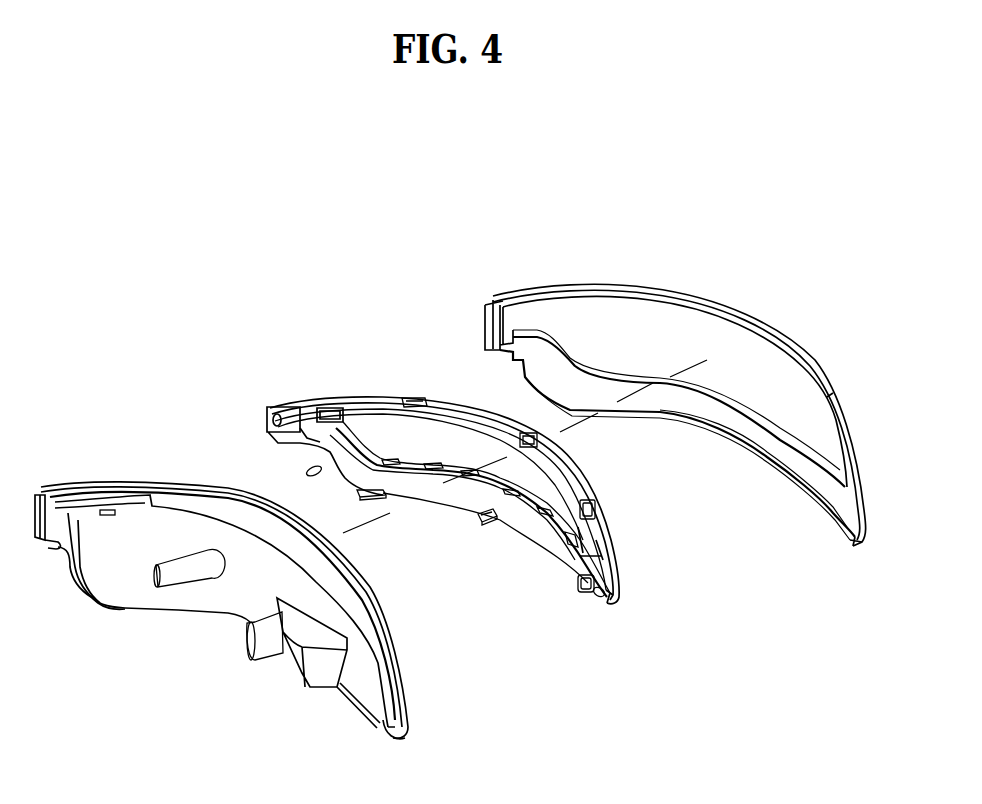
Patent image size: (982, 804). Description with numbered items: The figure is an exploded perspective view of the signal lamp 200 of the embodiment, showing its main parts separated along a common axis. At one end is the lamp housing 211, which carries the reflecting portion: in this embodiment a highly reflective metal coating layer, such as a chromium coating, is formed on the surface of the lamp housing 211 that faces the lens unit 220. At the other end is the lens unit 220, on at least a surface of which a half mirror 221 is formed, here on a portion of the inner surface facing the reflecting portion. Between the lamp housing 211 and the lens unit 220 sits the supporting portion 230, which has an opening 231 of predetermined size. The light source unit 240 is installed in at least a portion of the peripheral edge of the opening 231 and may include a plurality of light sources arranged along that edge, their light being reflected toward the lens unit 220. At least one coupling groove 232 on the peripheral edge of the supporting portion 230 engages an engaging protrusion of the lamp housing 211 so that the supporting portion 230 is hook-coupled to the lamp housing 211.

The signal lamp 200 is at (292, 213).
The lamp housing 211 is at (233, 603).
The lens unit 220 is at (702, 307).
The half mirror 221 is at (745, 361).
The supporting portion 230 is at (600, 567).
The opening 231 is at (548, 493).
The coupling groove 232 is at (368, 490).
The light source unit 240 is at (527, 517).